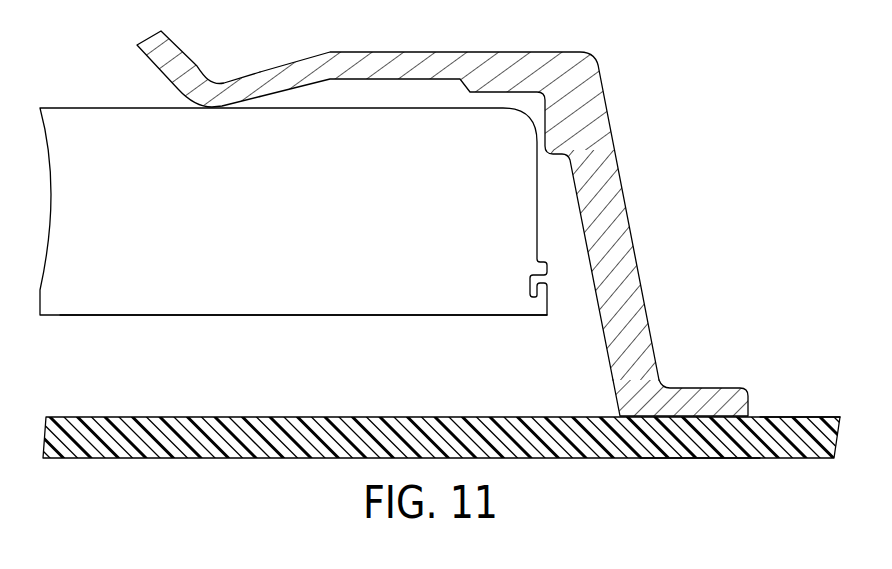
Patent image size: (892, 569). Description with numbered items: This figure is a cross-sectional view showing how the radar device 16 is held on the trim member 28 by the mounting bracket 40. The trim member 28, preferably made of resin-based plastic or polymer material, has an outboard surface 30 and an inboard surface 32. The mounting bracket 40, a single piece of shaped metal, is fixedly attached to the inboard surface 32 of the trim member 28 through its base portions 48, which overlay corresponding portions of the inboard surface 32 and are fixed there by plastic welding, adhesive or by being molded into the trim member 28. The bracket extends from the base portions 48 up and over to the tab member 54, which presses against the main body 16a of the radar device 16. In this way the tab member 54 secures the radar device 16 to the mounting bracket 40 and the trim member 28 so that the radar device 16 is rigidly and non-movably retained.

The radar device 16 is at (80, 108).
The main body 16a is at (408, 252).
The tab member 54 is at (247, 90).
The mounting bracket 40 is at (607, 89).
The base portions 48 is at (697, 387).
The trim member 28 is at (142, 417).
The outboard surface 30 is at (681, 460).
The inboard surface 32 is at (787, 416).